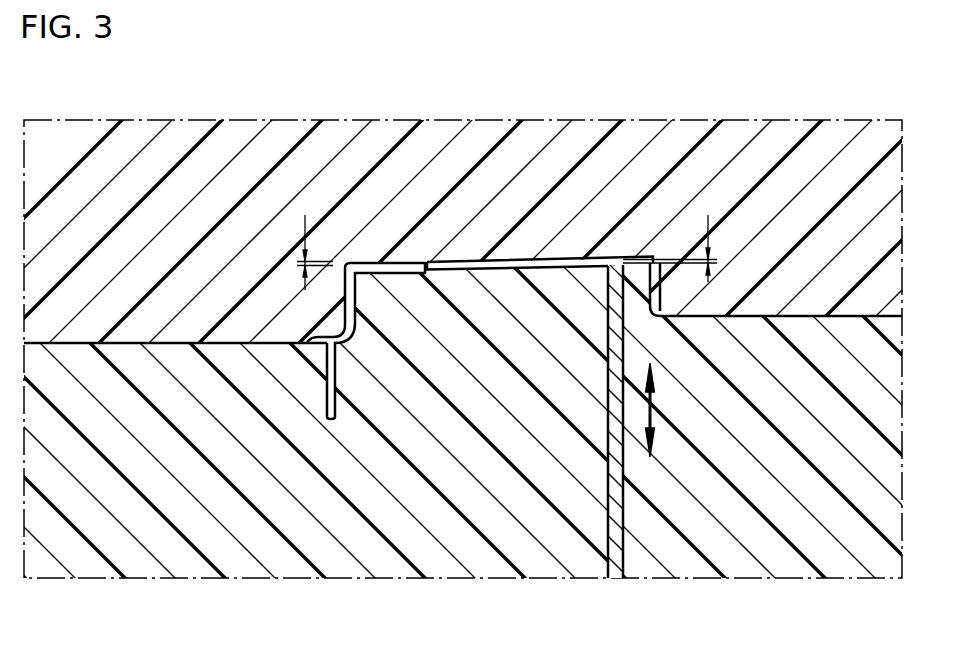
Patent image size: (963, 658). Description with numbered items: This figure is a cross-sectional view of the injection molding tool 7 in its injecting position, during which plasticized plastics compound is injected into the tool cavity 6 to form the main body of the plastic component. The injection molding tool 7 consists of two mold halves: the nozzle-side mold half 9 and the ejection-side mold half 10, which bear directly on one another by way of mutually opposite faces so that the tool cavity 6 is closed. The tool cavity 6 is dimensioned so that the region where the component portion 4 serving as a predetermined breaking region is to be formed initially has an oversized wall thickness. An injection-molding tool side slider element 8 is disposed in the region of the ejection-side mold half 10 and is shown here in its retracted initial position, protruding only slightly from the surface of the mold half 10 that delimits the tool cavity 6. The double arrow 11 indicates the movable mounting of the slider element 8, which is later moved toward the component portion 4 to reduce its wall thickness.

The component portion serving as predetermined breaking region 4 is at (427, 262).
The tool cavity 6 is at (507, 258).
The injection molding tool 7 is at (748, 100).
The slider element 8 is at (615, 540).
The mold half 9 is at (148, 223).
The mold half 10 is at (150, 407).
The double arrow 11 is at (652, 418).